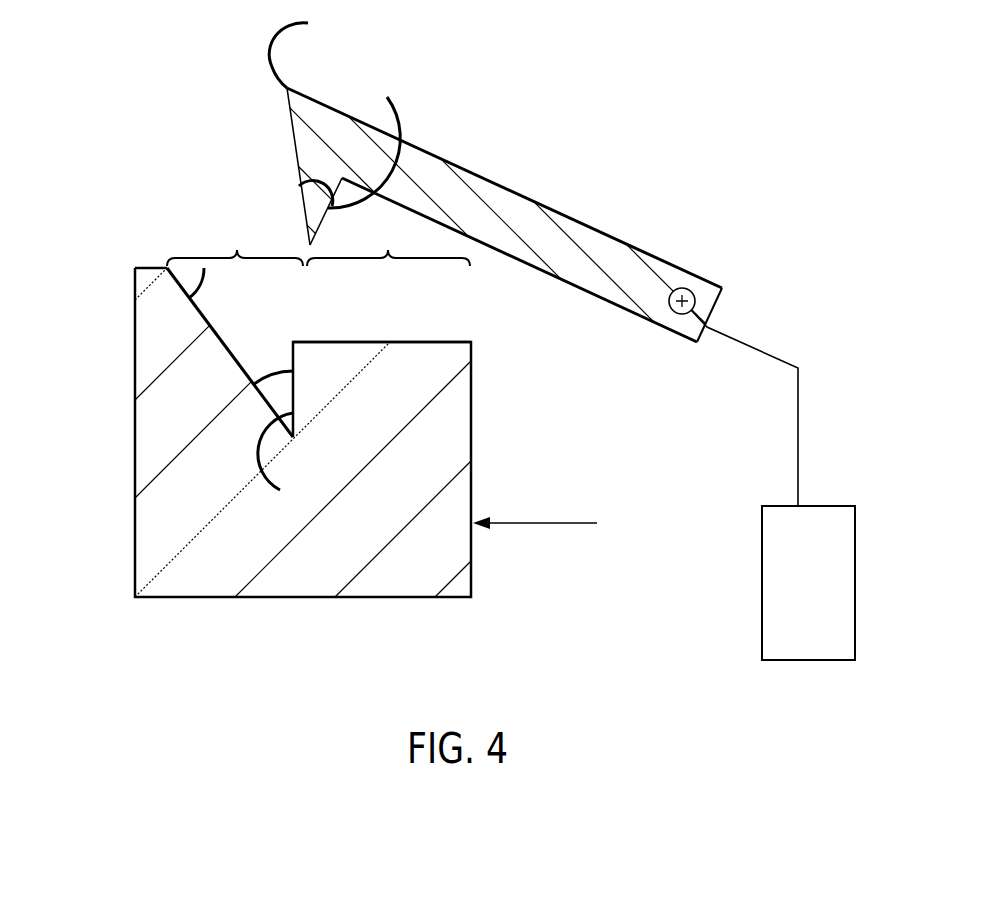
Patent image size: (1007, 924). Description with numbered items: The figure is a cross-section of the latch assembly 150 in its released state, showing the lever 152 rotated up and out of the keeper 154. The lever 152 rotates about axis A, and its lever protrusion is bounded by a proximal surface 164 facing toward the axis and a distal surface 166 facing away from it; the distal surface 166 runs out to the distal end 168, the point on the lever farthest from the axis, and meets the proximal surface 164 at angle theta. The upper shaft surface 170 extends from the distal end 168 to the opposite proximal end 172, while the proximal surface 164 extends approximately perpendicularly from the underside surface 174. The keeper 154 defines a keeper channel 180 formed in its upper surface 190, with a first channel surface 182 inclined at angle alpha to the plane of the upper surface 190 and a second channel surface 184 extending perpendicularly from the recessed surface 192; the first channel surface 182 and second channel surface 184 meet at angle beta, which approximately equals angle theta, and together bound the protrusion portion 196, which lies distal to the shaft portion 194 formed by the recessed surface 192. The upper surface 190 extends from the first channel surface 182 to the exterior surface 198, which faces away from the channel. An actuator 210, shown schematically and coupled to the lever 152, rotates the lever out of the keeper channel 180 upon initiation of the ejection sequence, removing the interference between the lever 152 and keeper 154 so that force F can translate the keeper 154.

The latch assembly 150 is at (136, 103).
The lever 152 is at (650, 200).
The keeper 154 is at (122, 305).
The proximal surface 164 is at (400, 139).
The distal surface 166 is at (297, 148).
The distal end 168 is at (305, 49).
The upper shaft surface 170 is at (512, 190).
The proximal end 172 is at (713, 312).
The underside surface 174 is at (590, 293).
The keeper channel 180 is at (265, 275).
The first channel surface 182 is at (223, 338).
The second channel surface 184 is at (285, 458).
The upper surface 190 is at (150, 267).
The recessed surface 192 is at (403, 340).
The shaft portion 194 is at (388, 242).
The protrusion portion 196 is at (235, 243).
The exterior surface 198 is at (133, 372).
The actuator 210 is at (821, 595).